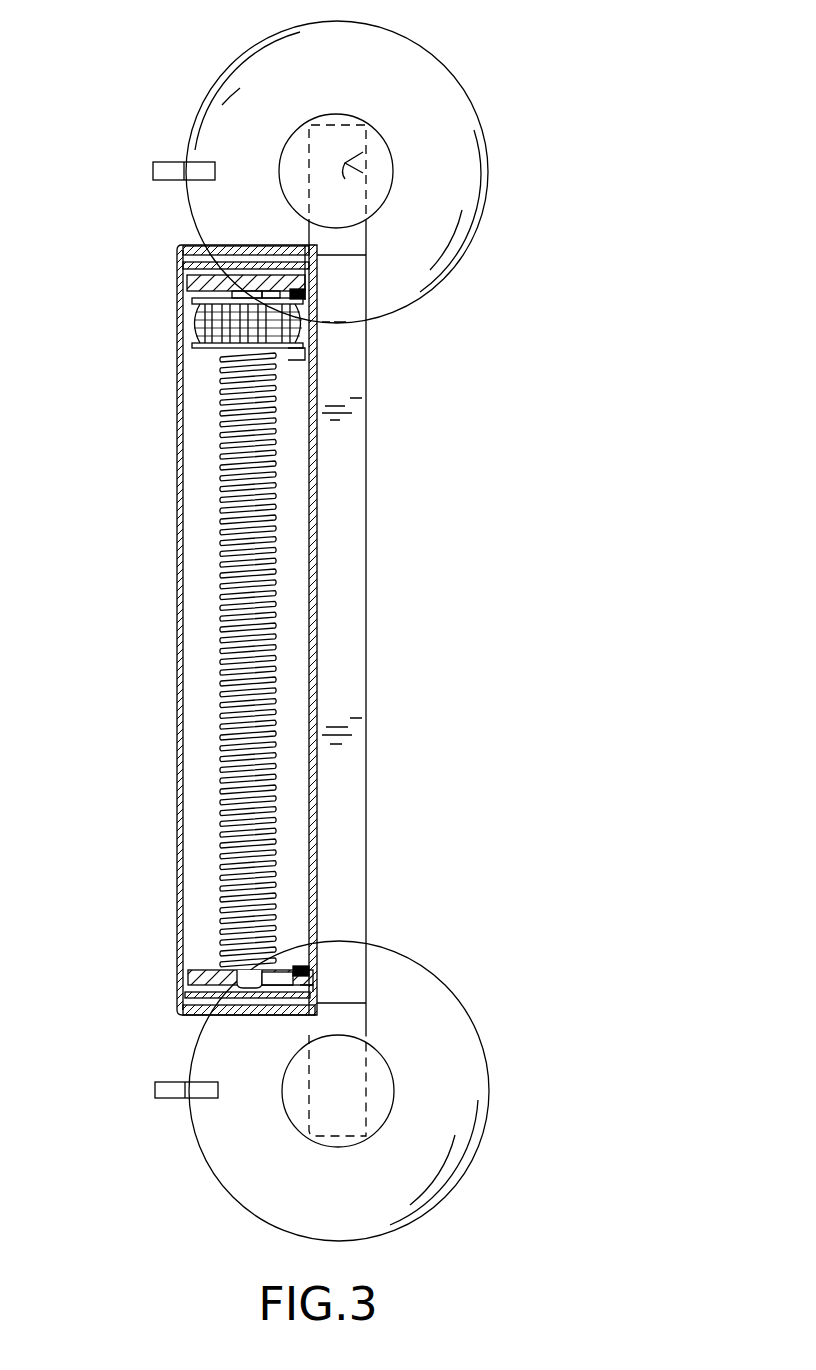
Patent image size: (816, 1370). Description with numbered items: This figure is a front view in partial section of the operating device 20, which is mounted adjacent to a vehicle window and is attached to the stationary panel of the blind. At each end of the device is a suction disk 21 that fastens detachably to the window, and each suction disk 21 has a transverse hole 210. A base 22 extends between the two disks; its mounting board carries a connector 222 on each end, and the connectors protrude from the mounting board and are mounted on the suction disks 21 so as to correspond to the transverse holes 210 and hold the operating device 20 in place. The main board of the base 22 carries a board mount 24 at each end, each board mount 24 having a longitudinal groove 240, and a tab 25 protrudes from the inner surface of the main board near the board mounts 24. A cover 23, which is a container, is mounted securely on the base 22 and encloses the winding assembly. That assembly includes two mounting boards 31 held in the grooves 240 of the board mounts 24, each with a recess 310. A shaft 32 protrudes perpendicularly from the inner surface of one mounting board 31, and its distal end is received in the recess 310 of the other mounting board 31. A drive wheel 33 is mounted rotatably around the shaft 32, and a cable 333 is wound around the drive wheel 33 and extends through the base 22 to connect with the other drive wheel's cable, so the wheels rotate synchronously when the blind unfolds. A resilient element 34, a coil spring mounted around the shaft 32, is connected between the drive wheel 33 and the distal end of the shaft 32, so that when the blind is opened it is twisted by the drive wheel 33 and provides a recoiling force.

The operating device 20 is at (125, 425).
The suction disk 21 is at (428, 95).
The transverse hole 210 is at (343, 179).
The base 22 is at (318, 533).
The connector 222 is at (330, 150).
The cover 23 is at (178, 492).
The board mount 24 is at (296, 294).
The tab 25 is at (293, 352).
The longitudinal groove 240 is at (317, 968).
The mounting board 31 is at (210, 288).
The recess 310 is at (277, 968).
The shaft 32 is at (240, 600).
The drive wheel 33 is at (198, 346).
The cable 333 is at (198, 318).
The resilient element 34 is at (222, 565).